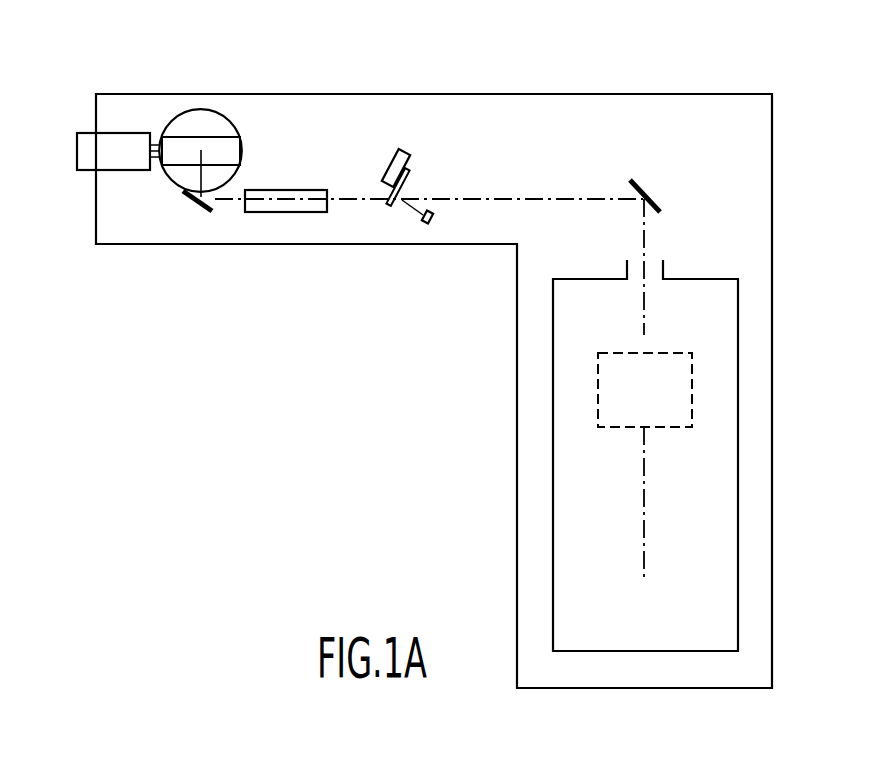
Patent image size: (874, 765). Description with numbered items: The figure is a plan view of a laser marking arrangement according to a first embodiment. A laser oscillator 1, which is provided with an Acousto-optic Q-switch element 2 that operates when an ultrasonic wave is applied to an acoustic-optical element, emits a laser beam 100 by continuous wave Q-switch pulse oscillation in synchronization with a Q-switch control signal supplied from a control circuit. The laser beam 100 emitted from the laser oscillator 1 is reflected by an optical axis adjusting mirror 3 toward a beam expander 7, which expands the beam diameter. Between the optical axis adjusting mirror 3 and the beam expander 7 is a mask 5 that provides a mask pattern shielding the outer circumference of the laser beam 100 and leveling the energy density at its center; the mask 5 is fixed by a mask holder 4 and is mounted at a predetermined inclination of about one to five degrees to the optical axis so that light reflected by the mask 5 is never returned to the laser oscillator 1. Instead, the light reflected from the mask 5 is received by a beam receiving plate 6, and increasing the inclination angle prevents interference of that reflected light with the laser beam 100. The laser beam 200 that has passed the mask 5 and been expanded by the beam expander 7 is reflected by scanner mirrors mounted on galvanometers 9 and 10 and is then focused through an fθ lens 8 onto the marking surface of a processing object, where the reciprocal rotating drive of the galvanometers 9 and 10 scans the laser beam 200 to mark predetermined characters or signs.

The laser beam 100 is at (523, 198).
The laser oscillator 1 is at (738, 372).
The Acousto-optic Q-switch element 2 is at (598, 387).
The optical axis adjusting mirror 3 is at (648, 193).
The mask holder 4 is at (407, 150).
The mask 5 is at (407, 183).
The beam receiving plate 6 is at (422, 220).
The beam expander 7 is at (305, 189).
The fθ lens 8 is at (243, 140).
The galvanometer 9 is at (200, 207).
The galvanometer 10 is at (117, 133).
The laser beam 200 is at (350, 198).